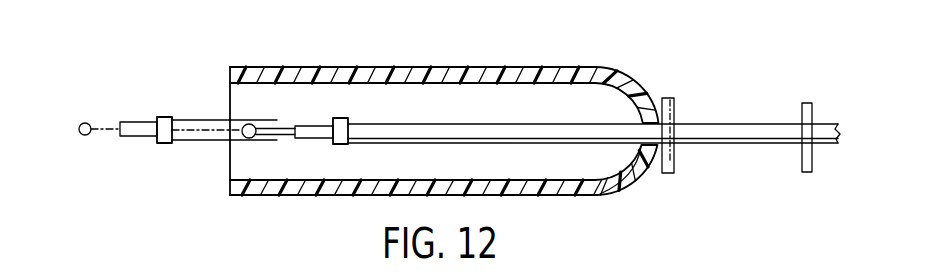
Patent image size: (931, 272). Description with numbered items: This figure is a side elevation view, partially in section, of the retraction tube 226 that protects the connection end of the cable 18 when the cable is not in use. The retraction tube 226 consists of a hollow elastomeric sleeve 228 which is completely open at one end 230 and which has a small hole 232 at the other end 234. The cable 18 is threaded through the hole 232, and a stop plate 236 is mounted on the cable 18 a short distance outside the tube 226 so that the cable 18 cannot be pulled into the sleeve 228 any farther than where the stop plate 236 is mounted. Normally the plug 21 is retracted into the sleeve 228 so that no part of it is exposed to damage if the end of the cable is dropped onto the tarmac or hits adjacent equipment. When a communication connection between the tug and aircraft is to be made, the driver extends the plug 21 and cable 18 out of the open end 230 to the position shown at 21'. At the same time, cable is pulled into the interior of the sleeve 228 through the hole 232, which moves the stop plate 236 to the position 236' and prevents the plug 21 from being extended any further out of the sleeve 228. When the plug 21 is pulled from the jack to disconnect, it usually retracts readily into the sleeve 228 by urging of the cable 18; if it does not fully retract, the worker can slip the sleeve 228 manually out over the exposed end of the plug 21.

The cable 18 is at (762, 128).
The plug 21 is at (295, 172).
The extended position of plug 21' is at (178, 164).
The retraction tube 226 is at (446, 126).
The hollow elastomeric sleeve 228 is at (425, 70).
The open end 230 is at (230, 92).
The small hole 232 is at (648, 150).
The other end of sleeve 234 is at (642, 88).
The stop plate 236 is at (837, 161).
The moved position of stop plate 236' is at (709, 157).